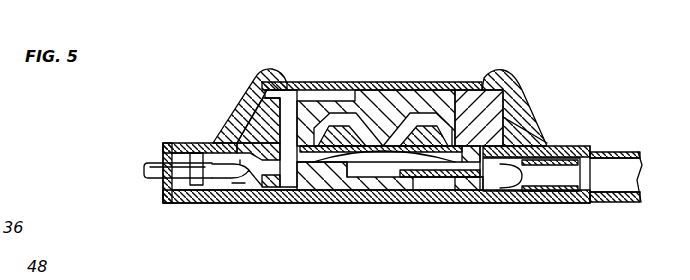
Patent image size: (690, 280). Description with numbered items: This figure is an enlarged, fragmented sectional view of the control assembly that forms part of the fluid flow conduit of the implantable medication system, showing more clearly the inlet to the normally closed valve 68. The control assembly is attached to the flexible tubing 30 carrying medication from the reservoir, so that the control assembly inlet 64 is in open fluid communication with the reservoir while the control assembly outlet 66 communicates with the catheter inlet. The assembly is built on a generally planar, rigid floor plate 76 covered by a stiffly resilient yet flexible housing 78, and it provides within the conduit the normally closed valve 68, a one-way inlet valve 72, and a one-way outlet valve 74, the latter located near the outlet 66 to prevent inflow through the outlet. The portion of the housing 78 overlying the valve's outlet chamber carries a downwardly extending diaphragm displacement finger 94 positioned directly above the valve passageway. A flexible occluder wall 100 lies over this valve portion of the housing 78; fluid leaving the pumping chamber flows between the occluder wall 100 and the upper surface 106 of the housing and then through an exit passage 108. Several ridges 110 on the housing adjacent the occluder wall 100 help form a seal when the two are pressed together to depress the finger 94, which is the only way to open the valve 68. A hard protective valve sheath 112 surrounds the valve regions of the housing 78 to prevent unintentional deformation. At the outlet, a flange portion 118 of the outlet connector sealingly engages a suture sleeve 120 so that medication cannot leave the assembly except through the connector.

The flexible tubing 30 is at (619, 203).
The control assembly inlet 64 is at (607, 150).
The control assembly outlet 66 is at (212, 142).
The normally closed valve 68 is at (400, 84).
The one-way inlet valve 72 is at (500, 176).
The one-way outlet valve 74 is at (250, 190).
The floor plate 76 is at (402, 201).
The housing 78 is at (505, 122).
The diaphragm displacement finger 94 is at (381, 216).
The occluder wall 100 is at (296, 90).
The upper surface 106 is at (309, 90).
The exit passage 108 is at (248, 108).
The ridges 110 is at (359, 113).
The protective valve sheath 112 is at (217, 90).
The flange portion 118 is at (205, 200).
The suture sleeve 120 is at (168, 205).